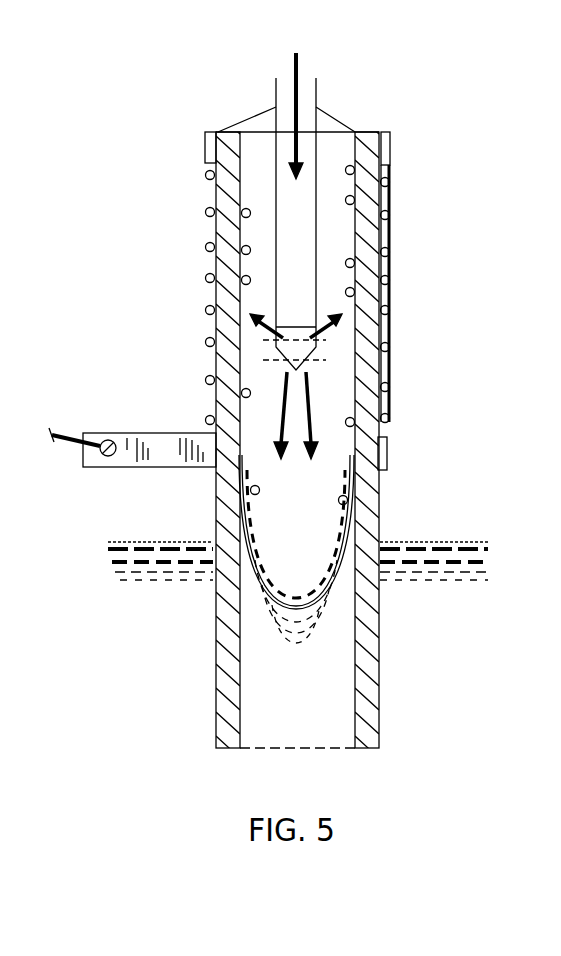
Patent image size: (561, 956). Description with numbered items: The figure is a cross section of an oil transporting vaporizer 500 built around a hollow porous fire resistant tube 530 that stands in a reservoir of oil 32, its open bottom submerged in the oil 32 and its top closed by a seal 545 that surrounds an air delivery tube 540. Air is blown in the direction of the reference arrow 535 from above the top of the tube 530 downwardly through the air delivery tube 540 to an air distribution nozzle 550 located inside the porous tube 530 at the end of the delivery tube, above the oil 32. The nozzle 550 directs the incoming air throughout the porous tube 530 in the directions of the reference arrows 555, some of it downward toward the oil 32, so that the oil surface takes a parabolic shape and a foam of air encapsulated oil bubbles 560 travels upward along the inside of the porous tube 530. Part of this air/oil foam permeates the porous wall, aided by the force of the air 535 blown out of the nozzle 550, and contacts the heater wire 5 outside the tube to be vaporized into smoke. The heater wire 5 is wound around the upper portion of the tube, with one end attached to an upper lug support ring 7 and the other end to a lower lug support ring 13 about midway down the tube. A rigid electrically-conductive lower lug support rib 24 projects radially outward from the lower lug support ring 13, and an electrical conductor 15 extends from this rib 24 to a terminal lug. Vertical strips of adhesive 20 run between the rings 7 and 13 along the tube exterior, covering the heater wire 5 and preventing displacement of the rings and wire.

The heater wire 5 is at (210, 247).
The upper lug support ring 7 is at (389, 148).
The lower lug support ring 13 is at (388, 452).
The electrical conductor 15 is at (82, 447).
The vertical strips of adhesive 20 is at (390, 292).
The lower lug support rib 24 is at (163, 452).
The oil 32 is at (415, 545).
The oil transporting vaporizer 500 is at (419, 467).
The hollow porous fire resistant tube 530 is at (377, 680).
The reference arrow for incoming air 535 is at (303, 58).
The air delivery tube 540 is at (316, 243).
The seal 545 is at (337, 107).
The air distribution nozzle 550 is at (263, 358).
The reference arrows for air directions 555 is at (252, 322).
The air encapsulated oil bubbles 560 is at (246, 213).